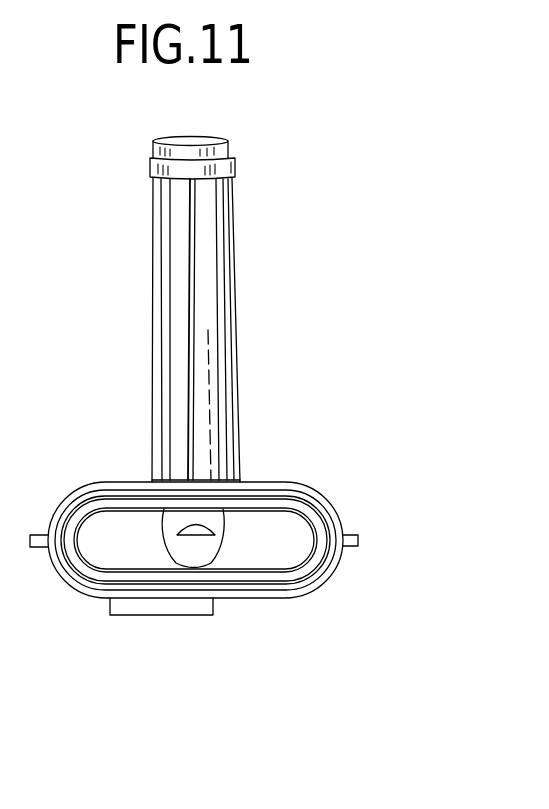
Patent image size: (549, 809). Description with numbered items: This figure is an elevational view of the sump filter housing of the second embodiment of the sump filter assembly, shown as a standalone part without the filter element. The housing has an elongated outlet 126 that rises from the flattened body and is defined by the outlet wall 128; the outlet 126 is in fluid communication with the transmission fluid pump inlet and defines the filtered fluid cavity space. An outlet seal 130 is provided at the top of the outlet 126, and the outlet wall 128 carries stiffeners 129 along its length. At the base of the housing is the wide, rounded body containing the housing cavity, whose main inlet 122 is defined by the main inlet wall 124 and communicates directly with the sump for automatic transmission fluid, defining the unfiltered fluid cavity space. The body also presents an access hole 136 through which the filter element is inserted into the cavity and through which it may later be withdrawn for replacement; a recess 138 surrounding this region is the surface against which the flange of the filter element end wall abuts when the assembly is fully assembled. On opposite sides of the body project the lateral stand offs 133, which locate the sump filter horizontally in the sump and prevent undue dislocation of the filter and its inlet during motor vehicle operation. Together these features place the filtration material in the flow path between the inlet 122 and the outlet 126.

The inlet 122 is at (172, 615).
The main inlet wall 124 is at (115, 606).
The outlet 126 is at (196, 137).
The outlet wall 128 is at (168, 277).
The stiffeners 129 is at (192, 271).
The outlet seal 130 is at (236, 161).
The lateral stand offs 133 is at (32, 535).
The access hole 136 is at (265, 526).
The recess 138 is at (113, 492).